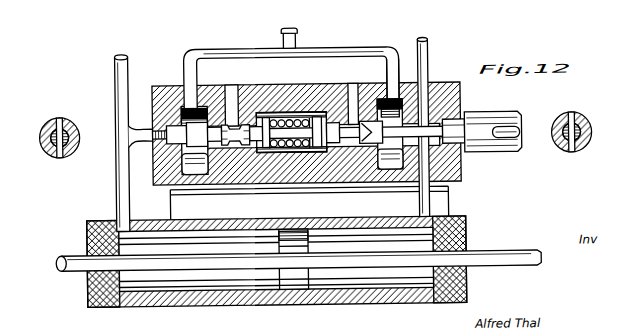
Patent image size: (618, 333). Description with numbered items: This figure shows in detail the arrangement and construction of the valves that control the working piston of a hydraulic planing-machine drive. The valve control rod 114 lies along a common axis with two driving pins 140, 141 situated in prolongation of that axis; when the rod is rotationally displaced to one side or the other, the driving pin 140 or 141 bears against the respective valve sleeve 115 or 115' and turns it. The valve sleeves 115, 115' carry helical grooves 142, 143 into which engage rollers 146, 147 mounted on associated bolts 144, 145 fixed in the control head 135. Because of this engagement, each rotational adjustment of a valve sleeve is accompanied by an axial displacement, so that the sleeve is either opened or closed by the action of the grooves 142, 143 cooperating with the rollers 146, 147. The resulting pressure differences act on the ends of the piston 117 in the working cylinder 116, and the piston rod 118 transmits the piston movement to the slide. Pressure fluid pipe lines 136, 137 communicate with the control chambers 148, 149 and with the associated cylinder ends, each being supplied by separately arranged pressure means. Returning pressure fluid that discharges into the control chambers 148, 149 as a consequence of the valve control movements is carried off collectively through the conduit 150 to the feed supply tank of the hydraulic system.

The valve control rod 114 is at (497, 155).
The valve sleeve 115 is at (196, 122).
The valve sleeve 115' is at (466, 95).
The working cylinder 116 is at (448, 289).
The piston 117 is at (304, 271).
The piston rod 118 is at (69, 268).
The control head 135 is at (211, 49).
The pressure fluid pipe line 136 is at (124, 48).
The pressure fluid pipe line 137 is at (429, 50).
The driving pin 140 is at (73, 115).
The driving pin 141 is at (584, 114).
The helical groove 142 is at (211, 166).
The helical groove 143 is at (350, 163).
The bolt 144 is at (232, 84).
The bolt 145 is at (352, 84).
The roller 146 is at (236, 112).
The roller 147 is at (351, 90).
The control chamber 148 is at (178, 95).
The control chamber 149 is at (404, 84).
The conduit 150 is at (293, 32).